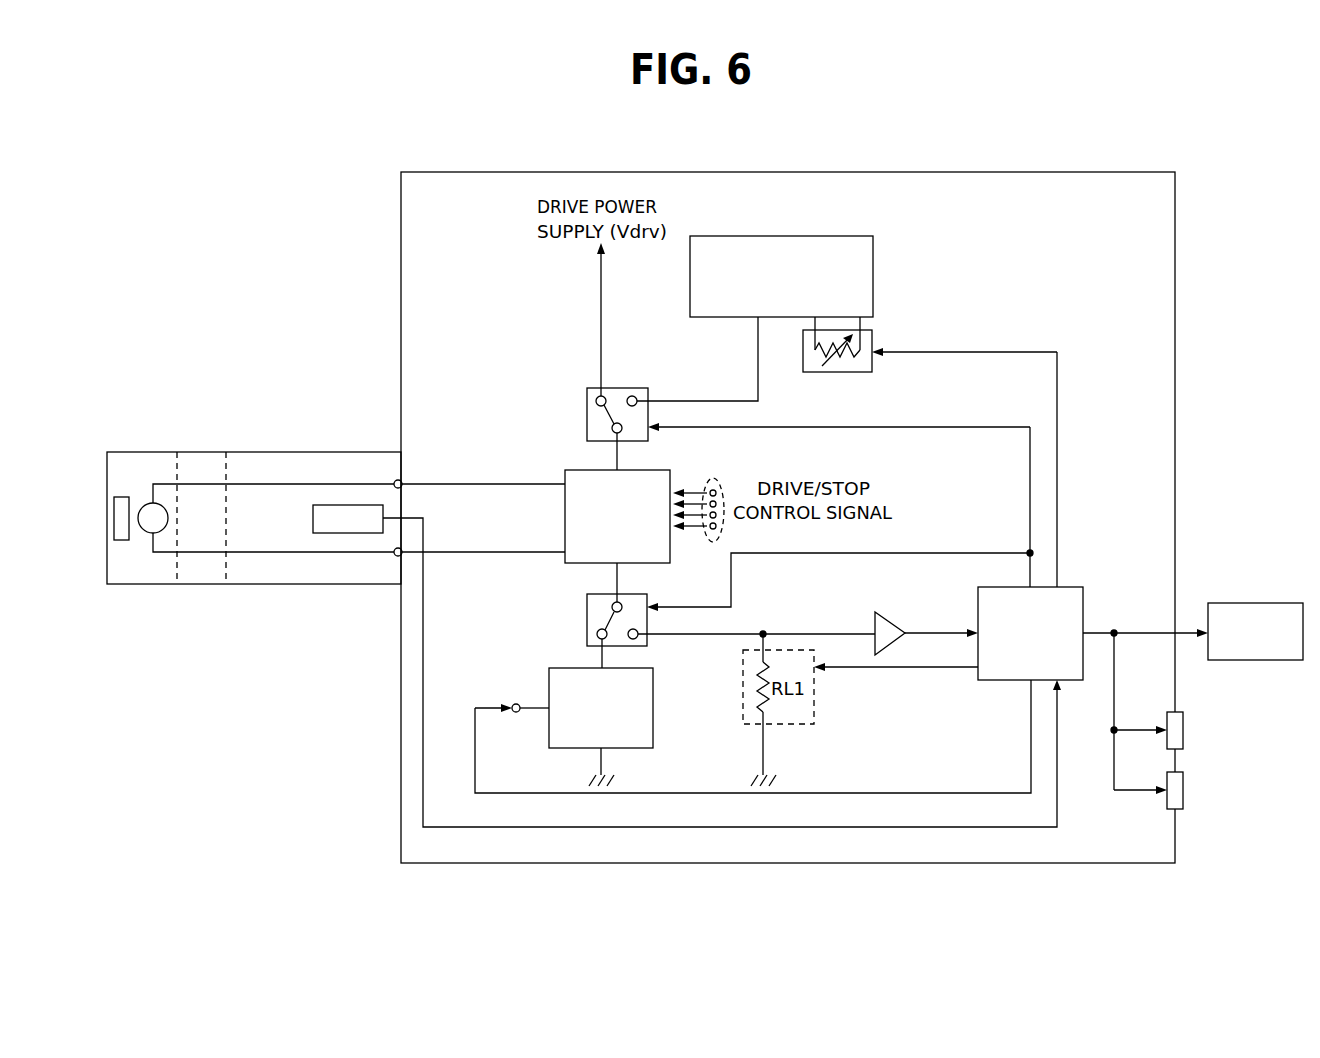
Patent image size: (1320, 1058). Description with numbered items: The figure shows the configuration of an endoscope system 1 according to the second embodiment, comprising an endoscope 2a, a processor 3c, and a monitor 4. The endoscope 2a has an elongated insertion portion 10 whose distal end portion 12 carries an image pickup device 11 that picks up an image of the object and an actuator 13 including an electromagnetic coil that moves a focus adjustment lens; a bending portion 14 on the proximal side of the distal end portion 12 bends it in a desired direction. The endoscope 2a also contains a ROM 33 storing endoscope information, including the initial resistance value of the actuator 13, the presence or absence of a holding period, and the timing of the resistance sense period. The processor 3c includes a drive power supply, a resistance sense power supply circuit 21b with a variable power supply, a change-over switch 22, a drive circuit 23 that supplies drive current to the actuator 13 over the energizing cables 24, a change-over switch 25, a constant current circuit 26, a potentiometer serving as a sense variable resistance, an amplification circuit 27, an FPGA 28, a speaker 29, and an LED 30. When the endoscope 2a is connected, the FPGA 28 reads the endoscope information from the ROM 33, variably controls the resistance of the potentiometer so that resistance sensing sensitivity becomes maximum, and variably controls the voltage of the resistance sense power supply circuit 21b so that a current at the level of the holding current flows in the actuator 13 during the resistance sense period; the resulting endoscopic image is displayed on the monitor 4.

The endoscope system 1 is at (1226, 134).
The endoscope 2a is at (326, 412).
The processor 3c is at (947, 171).
The monitor 4 is at (1258, 603).
The insertion portion 10 is at (201, 627).
The image pickup device 11 is at (122, 497).
The distal end portion 12 is at (123, 452).
The actuator 13 is at (148, 535).
The bending portion 14 is at (203, 452).
The resistance sense power supply circuit 21b is at (783, 236).
The change-over switch 22 is at (648, 392).
The drive circuit 23 is at (670, 475).
The energizing cables 24 is at (456, 484).
The change-over switch 25 is at (648, 600).
The constant current circuit 26 is at (653, 684).
The amplification circuit 27 is at (893, 612).
The FPGA 28 is at (1083, 592).
The speaker 29 is at (1183, 721).
The LED 30 is at (1183, 781).
The ROM 33 is at (313, 518).